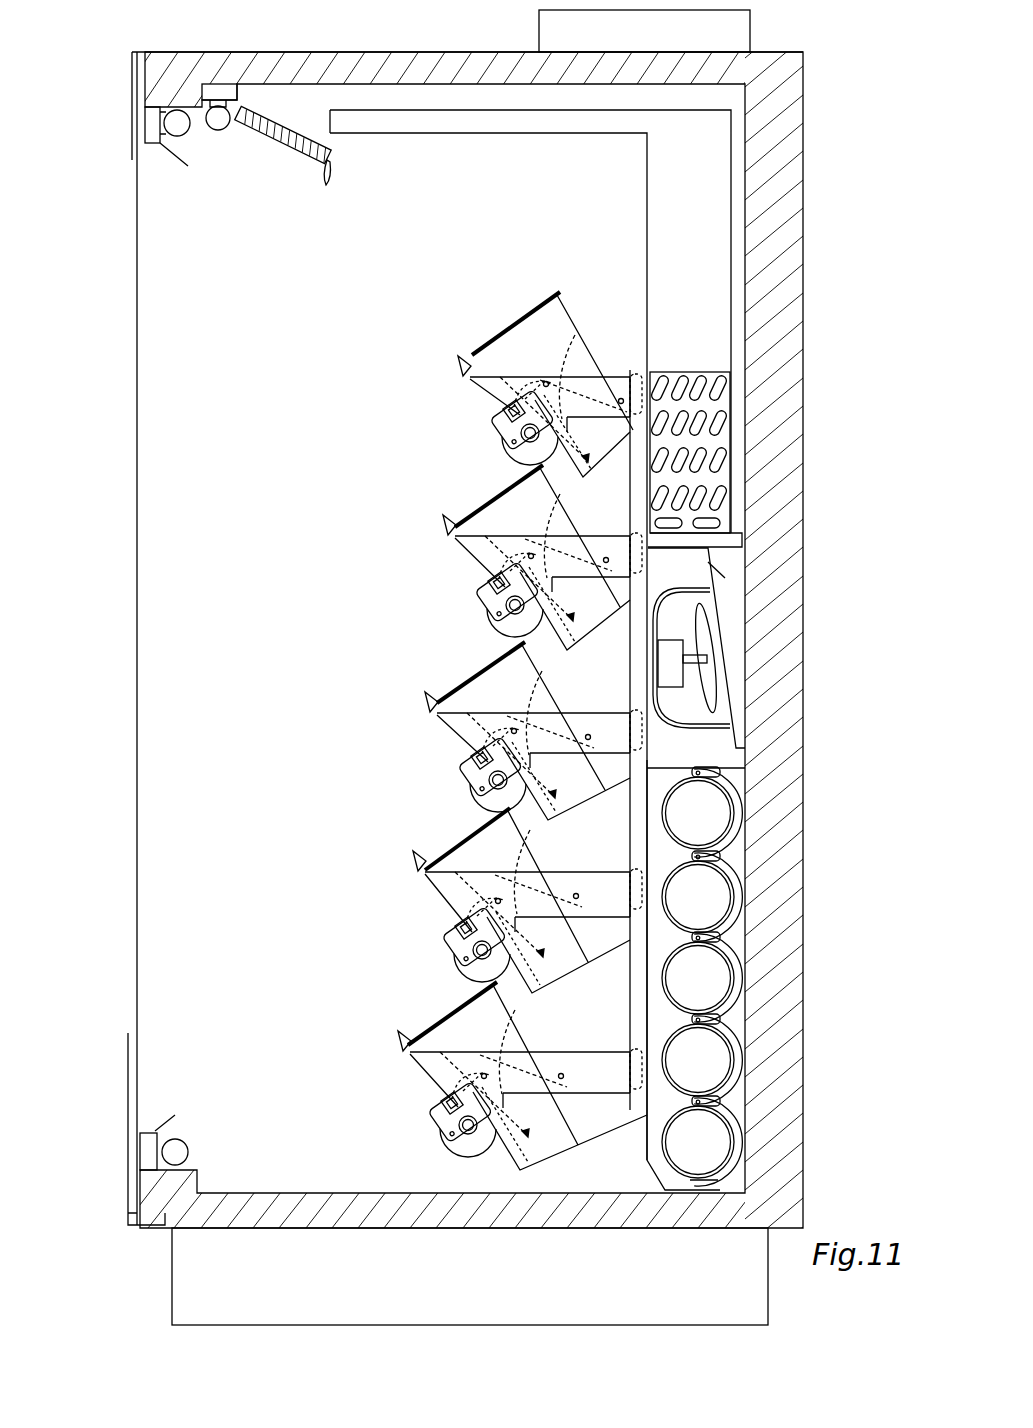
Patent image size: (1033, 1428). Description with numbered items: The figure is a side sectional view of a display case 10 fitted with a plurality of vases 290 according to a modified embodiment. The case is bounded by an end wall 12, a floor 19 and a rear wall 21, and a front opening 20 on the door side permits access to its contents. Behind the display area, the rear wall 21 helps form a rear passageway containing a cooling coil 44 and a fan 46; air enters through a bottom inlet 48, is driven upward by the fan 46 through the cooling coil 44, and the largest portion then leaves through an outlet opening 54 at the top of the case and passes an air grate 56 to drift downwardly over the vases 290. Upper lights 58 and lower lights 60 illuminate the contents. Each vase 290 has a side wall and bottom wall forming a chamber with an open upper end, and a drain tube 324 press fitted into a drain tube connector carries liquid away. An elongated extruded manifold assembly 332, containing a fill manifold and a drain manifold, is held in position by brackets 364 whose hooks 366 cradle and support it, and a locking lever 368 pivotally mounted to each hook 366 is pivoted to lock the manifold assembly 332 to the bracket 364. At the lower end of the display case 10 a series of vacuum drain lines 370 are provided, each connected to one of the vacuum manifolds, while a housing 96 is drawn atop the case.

The display case 10 is at (110, 207).
The end wall 12 is at (272, 853).
The floor 19 is at (306, 1193).
The front opening 20 is at (137, 815).
The rear wall 21 is at (806, 172).
The cooling coil 44 is at (698, 370).
The fan 46 is at (705, 627).
The bottom inlet 48 is at (640, 1179).
The outlet opening 54 is at (287, 100).
The air grate 56 is at (286, 142).
The upper lights 58 is at (178, 140).
The lower lights 60 is at (186, 1150).
The top housing 96 is at (539, 31).
The vase 290 is at (522, 302).
The drain tube 324 is at (586, 327).
The manifold assembly 332 is at (510, 418).
The bracket 364 is at (460, 365).
The hook 366 is at (526, 457).
The locking lever 368 is at (512, 421).
The vacuum drain line 370 is at (733, 822).